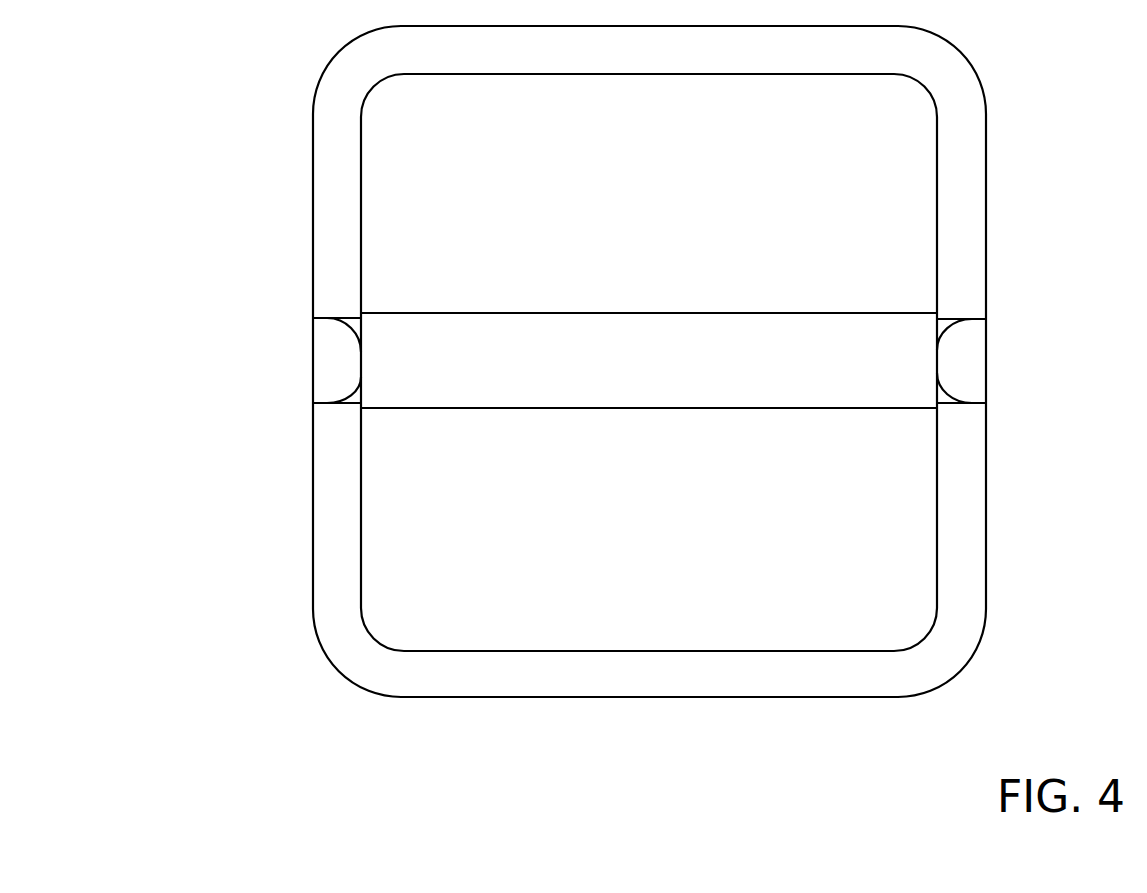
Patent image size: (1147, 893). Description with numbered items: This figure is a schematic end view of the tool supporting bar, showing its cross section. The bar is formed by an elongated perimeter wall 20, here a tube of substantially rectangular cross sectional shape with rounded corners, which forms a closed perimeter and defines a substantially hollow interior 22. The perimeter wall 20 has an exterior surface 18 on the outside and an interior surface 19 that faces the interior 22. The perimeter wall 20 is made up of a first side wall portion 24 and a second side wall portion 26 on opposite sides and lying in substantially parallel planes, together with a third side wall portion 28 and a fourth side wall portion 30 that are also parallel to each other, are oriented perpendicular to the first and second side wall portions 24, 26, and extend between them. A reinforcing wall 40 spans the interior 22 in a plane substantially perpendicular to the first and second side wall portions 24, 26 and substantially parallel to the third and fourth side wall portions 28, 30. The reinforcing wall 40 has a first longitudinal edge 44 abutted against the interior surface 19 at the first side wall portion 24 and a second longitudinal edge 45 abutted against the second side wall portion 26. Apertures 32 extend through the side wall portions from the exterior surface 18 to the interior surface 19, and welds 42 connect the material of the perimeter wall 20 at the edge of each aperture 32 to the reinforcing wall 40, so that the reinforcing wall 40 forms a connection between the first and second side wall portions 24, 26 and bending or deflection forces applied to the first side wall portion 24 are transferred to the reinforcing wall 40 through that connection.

The exterior surface 18 is at (986, 522).
The interior surface 19 is at (937, 507).
The perimeter wall 20 is at (965, 478).
The interior 22 is at (883, 178).
The first side wall portion 24 is at (337, 297).
The second side wall portion 26 is at (958, 230).
The third side wall portion 28 is at (673, 48).
The fourth side wall portion 30 is at (615, 675).
The apertures 32 is at (323, 335).
The reinforcing wall 40 is at (703, 365).
The welds 42 is at (360, 374).
The first longitudinal edge 44 is at (360, 363).
The second longitudinal edge 45 is at (937, 360).